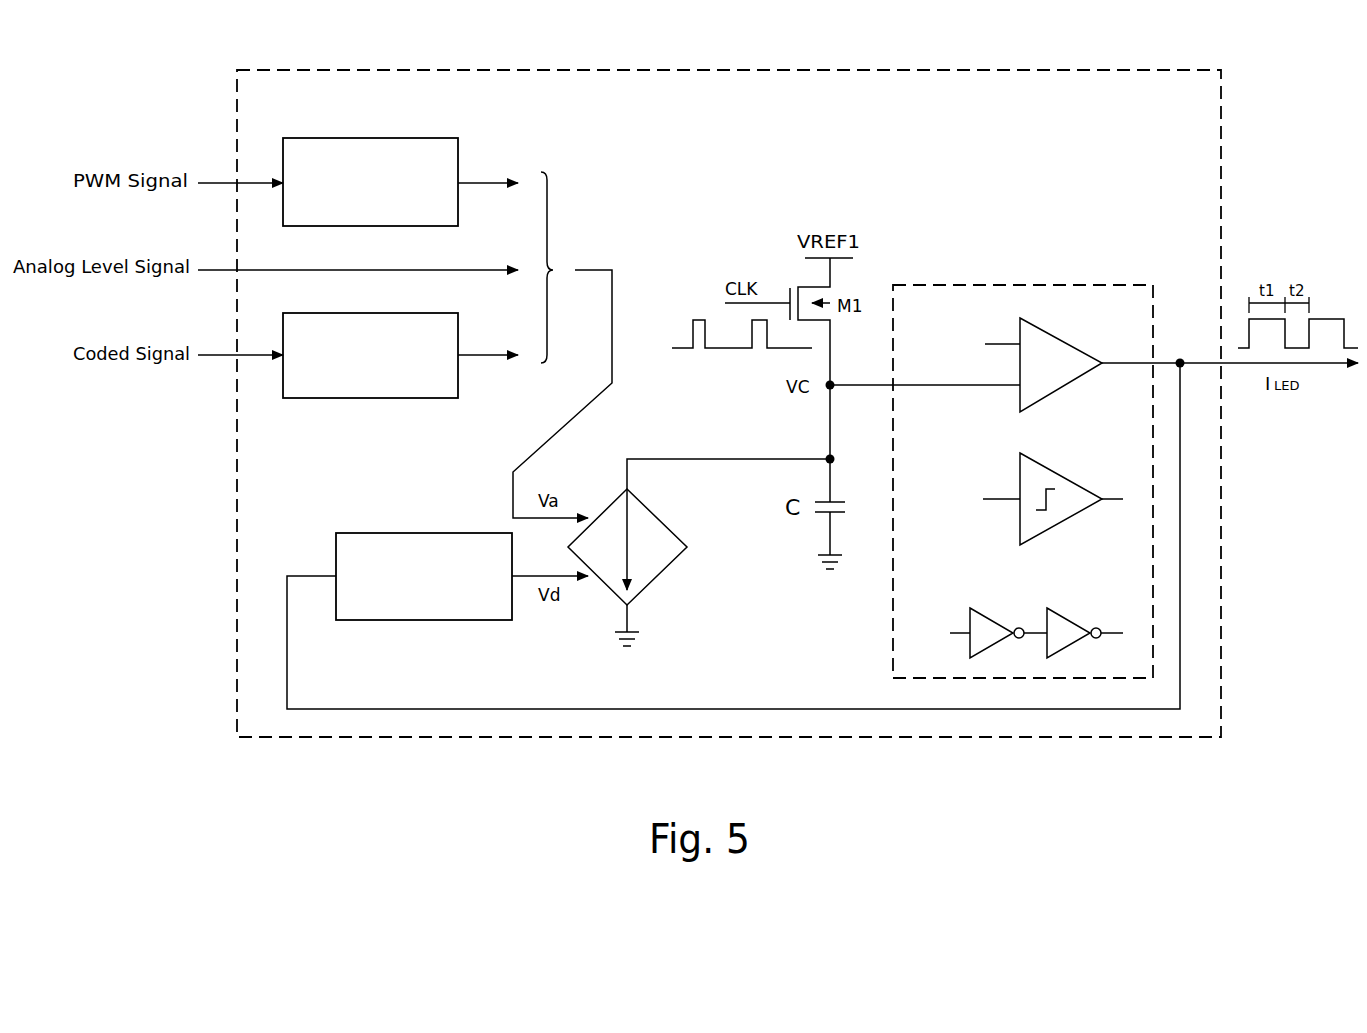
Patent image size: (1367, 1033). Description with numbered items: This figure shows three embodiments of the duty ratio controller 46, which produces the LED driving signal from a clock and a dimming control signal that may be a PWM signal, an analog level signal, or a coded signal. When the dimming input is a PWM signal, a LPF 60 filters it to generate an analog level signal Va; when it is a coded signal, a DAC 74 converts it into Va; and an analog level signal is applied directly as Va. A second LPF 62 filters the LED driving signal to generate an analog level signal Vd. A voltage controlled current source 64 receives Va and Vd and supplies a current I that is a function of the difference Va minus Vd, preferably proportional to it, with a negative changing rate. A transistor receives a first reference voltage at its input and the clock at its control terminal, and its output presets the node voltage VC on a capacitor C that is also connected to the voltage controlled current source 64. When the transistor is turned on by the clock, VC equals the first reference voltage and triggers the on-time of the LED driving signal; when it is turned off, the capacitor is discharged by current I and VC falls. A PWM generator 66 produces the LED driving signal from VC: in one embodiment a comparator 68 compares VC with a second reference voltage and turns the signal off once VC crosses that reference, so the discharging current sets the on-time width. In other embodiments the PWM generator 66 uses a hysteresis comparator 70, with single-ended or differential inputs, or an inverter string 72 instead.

The duty ratio controller 46 is at (727, 70).
The LPF 60 is at (370, 138).
The DAC 74 is at (368, 398).
The LPF 62 is at (424, 533).
The voltage controlled current source 64 is at (661, 520).
The PWM generator 66 is at (1021, 285).
The comparator 68 is at (1060, 335).
The hysteresis comparator 70 is at (1060, 473).
The inverter string 72 is at (1073, 600).